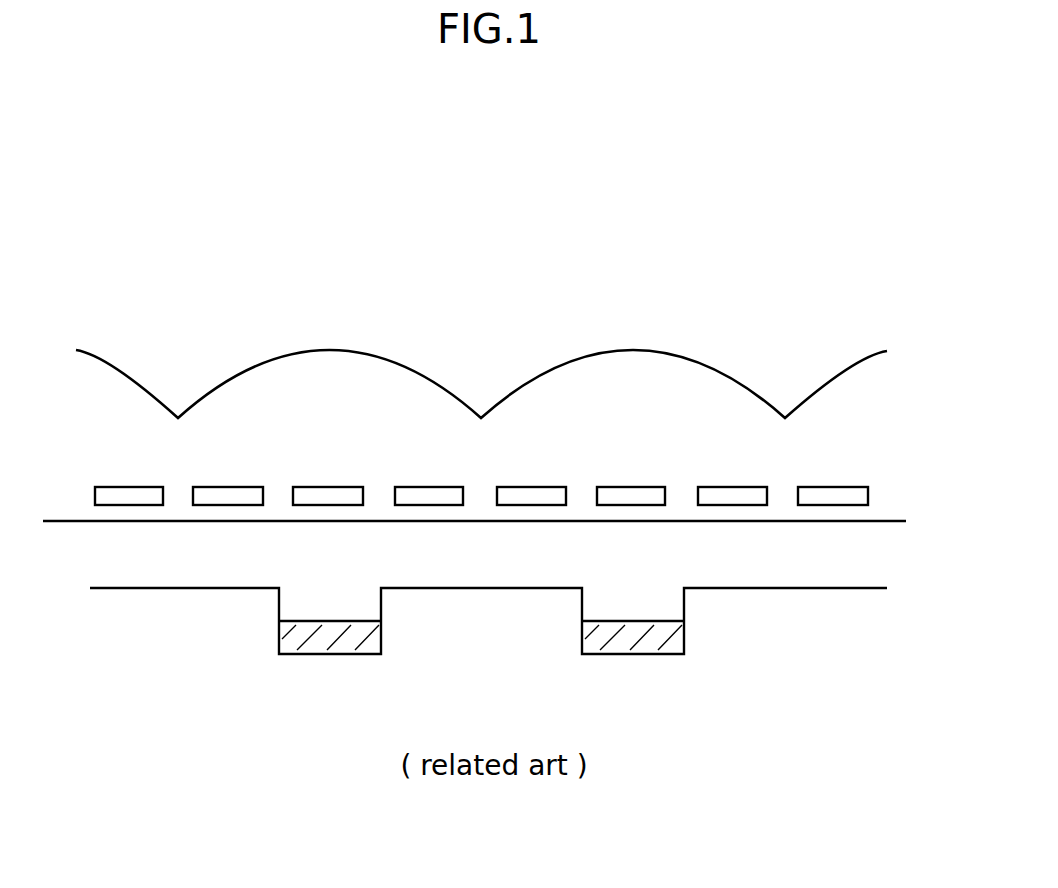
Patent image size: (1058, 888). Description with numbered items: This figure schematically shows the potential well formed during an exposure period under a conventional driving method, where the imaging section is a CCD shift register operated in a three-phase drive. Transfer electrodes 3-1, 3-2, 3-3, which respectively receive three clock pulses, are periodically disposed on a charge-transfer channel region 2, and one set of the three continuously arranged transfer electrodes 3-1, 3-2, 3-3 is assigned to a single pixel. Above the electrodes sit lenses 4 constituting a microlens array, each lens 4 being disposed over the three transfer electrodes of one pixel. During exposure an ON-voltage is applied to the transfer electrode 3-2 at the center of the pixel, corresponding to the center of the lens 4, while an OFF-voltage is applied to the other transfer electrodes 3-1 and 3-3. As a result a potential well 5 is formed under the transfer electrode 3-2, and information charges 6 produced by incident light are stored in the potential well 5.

The charge-transfer channel region 2 is at (887, 554).
The transfer electrode 3-1 is at (237, 487).
The transfer electrode 3-2 is at (338, 487).
The transfer electrode 3-3 is at (437, 487).
The lens 4 is at (364, 356).
The potential well 5 is at (382, 636).
The information charges 6 is at (322, 620).